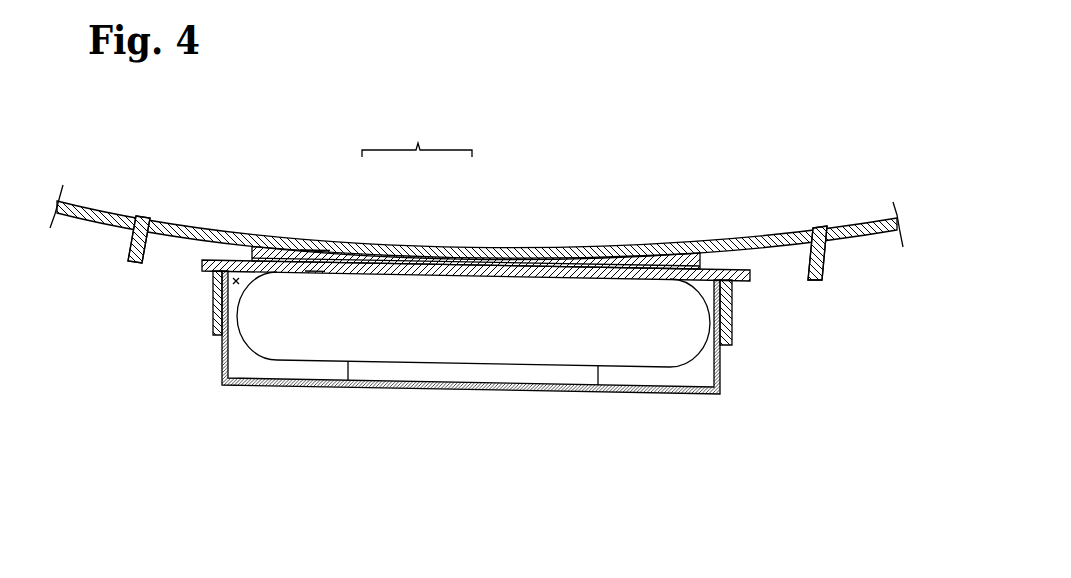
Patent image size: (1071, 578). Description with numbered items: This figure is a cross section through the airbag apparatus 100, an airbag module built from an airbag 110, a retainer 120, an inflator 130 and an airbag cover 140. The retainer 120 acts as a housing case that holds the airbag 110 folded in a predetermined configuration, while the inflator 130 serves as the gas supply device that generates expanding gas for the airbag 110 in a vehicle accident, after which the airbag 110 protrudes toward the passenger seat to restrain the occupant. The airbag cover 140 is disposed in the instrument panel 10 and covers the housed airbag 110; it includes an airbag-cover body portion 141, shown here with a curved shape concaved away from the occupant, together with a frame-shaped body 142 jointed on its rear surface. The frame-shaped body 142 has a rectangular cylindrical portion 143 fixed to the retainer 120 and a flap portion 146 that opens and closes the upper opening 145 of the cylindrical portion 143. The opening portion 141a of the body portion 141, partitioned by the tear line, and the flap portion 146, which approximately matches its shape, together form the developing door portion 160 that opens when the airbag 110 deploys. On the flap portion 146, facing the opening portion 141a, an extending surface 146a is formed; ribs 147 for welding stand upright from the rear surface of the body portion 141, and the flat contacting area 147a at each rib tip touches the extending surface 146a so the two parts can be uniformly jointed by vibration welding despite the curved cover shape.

The instrument panel 10 is at (95, 207).
The airbag apparatus 100 is at (202, 445).
The airbag 110 is at (674, 369).
The retainer 120 is at (722, 372).
The inflator 130 is at (410, 370).
The airbag cover 140 is at (706, 221).
The airbag-cover body portion 141 is at (174, 222).
The opening portion 141a is at (449, 262).
The frame-shaped body 142 is at (734, 333).
The cylindrical portion 143 is at (212, 336).
The upper opening 145 is at (236, 278).
The flap portion 146 is at (358, 260).
The extending surface 146a is at (314, 252).
The rib for welding 147 is at (242, 258).
The contacting area 147a is at (314, 252).
The developing door portion 160 is at (417, 135).